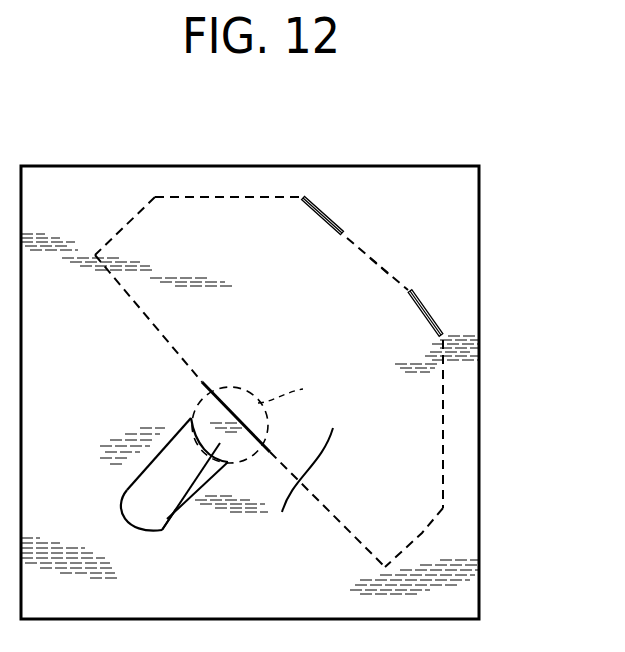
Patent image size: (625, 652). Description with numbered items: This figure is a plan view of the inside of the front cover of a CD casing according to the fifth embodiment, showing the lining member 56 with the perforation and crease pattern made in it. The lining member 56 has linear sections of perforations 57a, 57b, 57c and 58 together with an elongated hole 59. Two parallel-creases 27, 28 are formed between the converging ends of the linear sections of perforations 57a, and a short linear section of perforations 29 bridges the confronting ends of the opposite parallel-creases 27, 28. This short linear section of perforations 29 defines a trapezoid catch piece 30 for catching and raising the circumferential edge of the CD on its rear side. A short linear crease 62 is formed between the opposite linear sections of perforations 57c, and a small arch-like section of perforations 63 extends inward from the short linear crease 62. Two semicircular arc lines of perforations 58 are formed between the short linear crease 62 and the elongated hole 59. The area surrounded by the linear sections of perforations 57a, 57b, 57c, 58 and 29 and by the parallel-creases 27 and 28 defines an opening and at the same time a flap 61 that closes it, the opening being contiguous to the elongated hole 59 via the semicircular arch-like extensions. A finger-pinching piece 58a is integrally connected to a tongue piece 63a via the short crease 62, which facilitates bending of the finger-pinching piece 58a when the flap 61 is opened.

The lining member 56 is at (464, 225).
The linear section of perforations 57a is at (213, 197).
The linear section of perforations 57b is at (123, 228).
The linear section of perforations 57c is at (182, 357).
The parallel-crease 27 is at (322, 214).
The parallel-crease 28 is at (327, 220).
The short linear section of perforations 29 is at (411, 290).
The trapezoid catch piece 30 is at (385, 257).
The small arch-like section of perforations 63 is at (250, 388).
The tongue piece 63a is at (308, 390).
The short linear crease 62 is at (222, 402).
The flap 61 is at (295, 487).
The elongated hole 59 is at (135, 500).
The semicircular arc lines of perforations 58 is at (196, 497).
The finger-pinching piece 58a is at (165, 527).